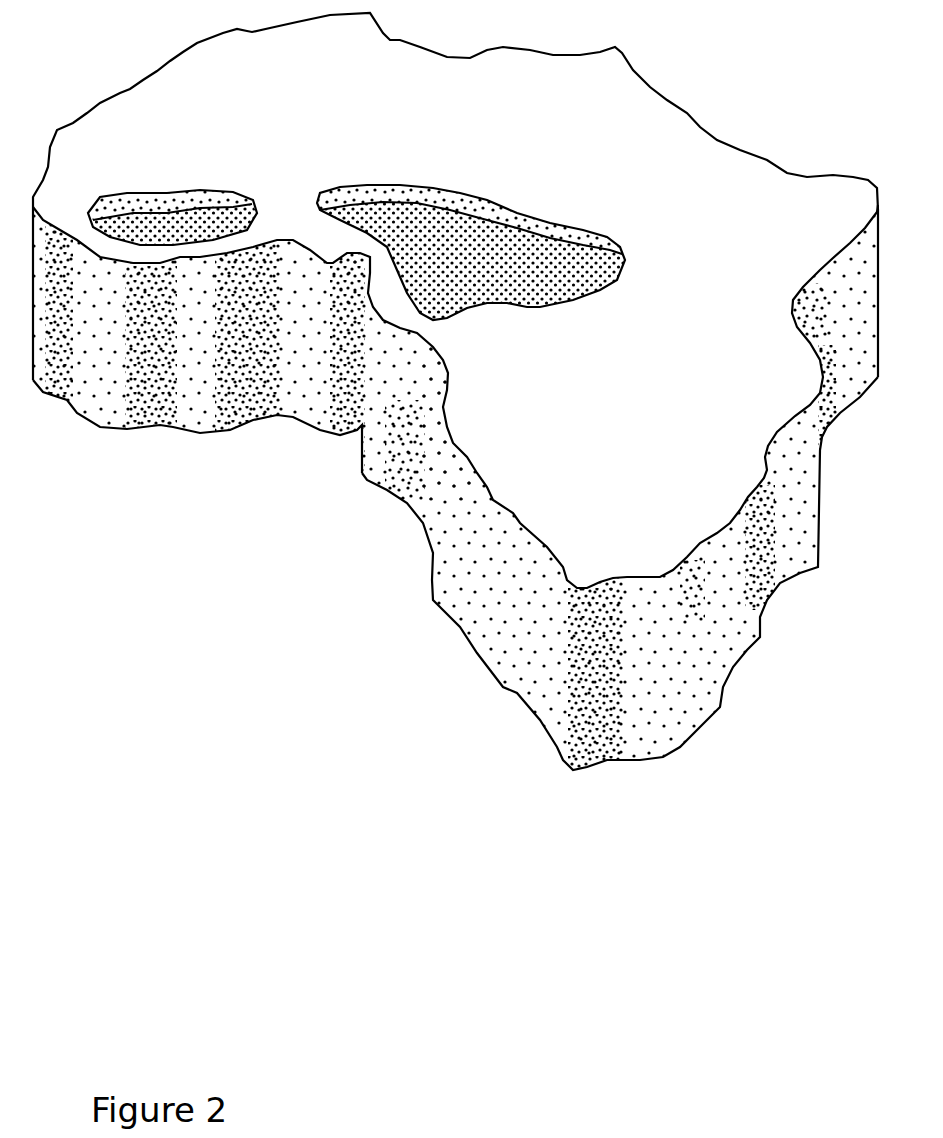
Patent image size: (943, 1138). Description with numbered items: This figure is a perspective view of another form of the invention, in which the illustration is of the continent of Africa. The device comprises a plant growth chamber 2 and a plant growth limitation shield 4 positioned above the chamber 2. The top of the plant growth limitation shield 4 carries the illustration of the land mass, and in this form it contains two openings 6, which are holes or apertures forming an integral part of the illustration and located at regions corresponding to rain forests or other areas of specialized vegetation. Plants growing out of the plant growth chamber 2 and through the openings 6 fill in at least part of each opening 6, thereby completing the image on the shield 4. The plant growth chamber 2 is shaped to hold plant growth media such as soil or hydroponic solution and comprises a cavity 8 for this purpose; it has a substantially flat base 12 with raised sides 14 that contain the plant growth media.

The plant growth chamber 2 is at (177, 208).
The plant growth limitation shield 4 is at (740, 267).
The opening 6 is at (237, 193).
The cavity 8 is at (400, 210).
The base 12 is at (530, 745).
The raised sides 14 is at (410, 473).